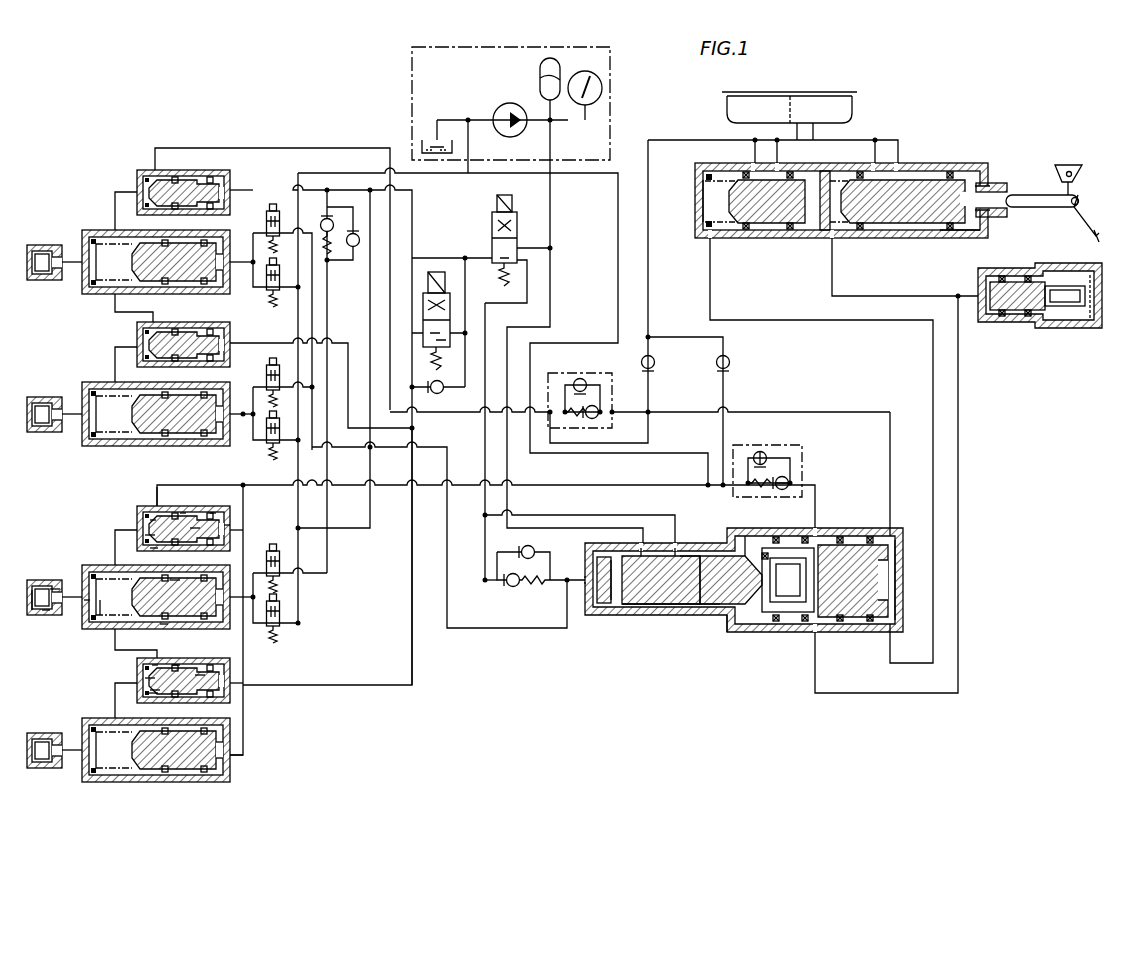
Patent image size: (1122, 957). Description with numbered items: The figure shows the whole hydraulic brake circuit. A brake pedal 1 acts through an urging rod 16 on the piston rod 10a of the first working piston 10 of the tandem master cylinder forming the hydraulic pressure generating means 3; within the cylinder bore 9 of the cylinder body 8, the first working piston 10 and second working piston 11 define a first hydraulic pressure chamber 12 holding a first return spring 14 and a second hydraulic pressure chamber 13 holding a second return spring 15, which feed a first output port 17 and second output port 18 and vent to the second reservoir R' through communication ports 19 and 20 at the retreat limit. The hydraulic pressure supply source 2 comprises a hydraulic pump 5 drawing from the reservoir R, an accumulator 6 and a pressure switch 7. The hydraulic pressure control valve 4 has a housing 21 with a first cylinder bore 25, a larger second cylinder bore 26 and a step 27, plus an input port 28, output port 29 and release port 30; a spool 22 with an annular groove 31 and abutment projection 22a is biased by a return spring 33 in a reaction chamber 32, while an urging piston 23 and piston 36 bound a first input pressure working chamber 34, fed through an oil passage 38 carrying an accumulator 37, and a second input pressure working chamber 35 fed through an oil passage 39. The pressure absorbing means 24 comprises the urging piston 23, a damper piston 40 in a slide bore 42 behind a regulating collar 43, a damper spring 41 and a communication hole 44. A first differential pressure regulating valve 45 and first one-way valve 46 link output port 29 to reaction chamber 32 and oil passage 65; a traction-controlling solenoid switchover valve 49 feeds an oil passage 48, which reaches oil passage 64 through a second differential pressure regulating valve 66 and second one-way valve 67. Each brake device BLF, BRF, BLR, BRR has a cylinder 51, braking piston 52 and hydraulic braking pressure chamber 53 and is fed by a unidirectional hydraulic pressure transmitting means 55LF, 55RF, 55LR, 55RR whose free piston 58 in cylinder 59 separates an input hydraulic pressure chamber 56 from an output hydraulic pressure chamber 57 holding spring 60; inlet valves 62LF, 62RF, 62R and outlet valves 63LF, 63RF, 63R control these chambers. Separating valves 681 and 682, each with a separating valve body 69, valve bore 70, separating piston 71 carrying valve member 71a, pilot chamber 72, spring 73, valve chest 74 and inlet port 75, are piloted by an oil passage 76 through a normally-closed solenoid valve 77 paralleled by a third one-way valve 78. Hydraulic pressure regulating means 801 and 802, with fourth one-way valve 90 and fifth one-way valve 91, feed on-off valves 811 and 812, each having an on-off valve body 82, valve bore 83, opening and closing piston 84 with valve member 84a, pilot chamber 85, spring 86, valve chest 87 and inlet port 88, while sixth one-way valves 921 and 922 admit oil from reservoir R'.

The brake pedal 1 is at (1098, 232).
The hydraulic pressure supply source 2 is at (608, 102).
The hydraulic pressure generating means 3 is at (829, 189).
The hydraulic pressure control valve 4 is at (746, 583).
The hydraulic pump 5 is at (500, 110).
The accumulator 6 is at (538, 76).
The pressure switch 7 is at (586, 98).
The cylinder body 8 is at (950, 240).
The cylinder bore 9 is at (738, 236).
The first working piston 10 is at (948, 170).
The piston rod 10a is at (998, 182).
The second working piston 11 is at (784, 236).
The first hydraulic pressure chamber 12 is at (842, 236).
The second hydraulic pressure chamber 13 is at (724, 168).
The first return spring 14 is at (872, 236).
The second return spring 15 is at (706, 178).
The urging rod 16 is at (1025, 200).
The first output port 17 is at (825, 236).
The second output port 18 is at (704, 235).
The communication port 19 is at (862, 170).
The communication port 20 is at (744, 170).
The housing 21 is at (780, 536).
The spool 22 is at (668, 608).
The abutment projection 22a is at (712, 612).
The urging piston 23 is at (764, 552).
The pressure absorbing means 24 is at (775, 612).
The first cylinder bore 25 is at (635, 604).
The second cylinder bore 26 is at (740, 548).
The step 27 is at (725, 632).
The input port 28 is at (661, 580).
The output port 29 is at (645, 546).
The release port 30 is at (678, 540).
The annular groove 31 is at (688, 612).
The reaction chamber 32 is at (604, 604).
The return spring 33 is at (582, 572).
The first input pressure working chamber 34 is at (840, 536).
The second input pressure working chamber 35 is at (900, 540).
The piston 36 is at (870, 536).
The accumulator 37 is at (1040, 330).
The oil passage 38 is at (963, 392).
The oil passage 39 is at (710, 278).
The damper piston 40 is at (807, 536).
The damper spring 41 is at (835, 632).
The slide bore 42 is at (800, 626).
The regulating collar 43 is at (731, 580).
The communication hole 44 is at (765, 624).
The first differential pressure regulating valve 45 is at (510, 588).
The first one-way valve 46 is at (520, 552).
The oil passage 48 is at (418, 240).
The traction-controlling solenoid switchover valve 49 is at (517, 230).
The cylinder 51 is at (44, 616).
The braking piston 52 is at (30, 594).
The hydraulic braking pressure chamber 53 is at (54, 588).
The unidirectional hydraulic pressure transmitting means 55RF is at (94, 232).
The unidirectional hydraulic pressure transmitting means 55LR is at (140, 446).
The unidirectional hydraulic pressure transmitting means 55LF is at (86, 574).
The unidirectional hydraulic pressure transmitting means 55RR is at (160, 784).
The input hydraulic pressure chamber 56 is at (240, 592).
The output hydraulic pressure chamber 57 is at (102, 618).
The free piston 58 is at (186, 592).
The cylinder 59 is at (166, 630).
The spring 60 is at (86, 606).
The inlet valve 62RF is at (266, 222).
The inlet valve 62R is at (266, 378).
The inlet valve 62LF is at (273, 548).
The outlet valve 63RF is at (272, 306).
The outlet valve 63R is at (272, 452).
The outlet valve 63LF is at (282, 632).
The oil passage 64 is at (327, 314).
The oil passage 65 is at (445, 548).
The second differential pressure regulating valve 66 is at (322, 222).
The second one-way valve 67 is at (354, 250).
The first separating valve 681 is at (190, 658).
The second separating valve 682 is at (188, 322).
The separating valve body 69 is at (243, 704).
The valve bore 70 is at (150, 692).
The separating piston 71 is at (202, 683).
The valve member 71a is at (144, 678).
The pilot chamber 72 is at (243, 682).
The spring 73 is at (174, 664).
The valve chest 74 is at (148, 695).
The inlet port 75 is at (150, 664).
The oil passage 76 is at (430, 610).
The normally-closed type solenoid valve 77 is at (422, 306).
The third one-way valve 78 is at (440, 394).
The hydraulic pressure regulating means 801 is at (755, 446).
The hydraulic pressure regulating means 802 is at (608, 372).
The on-off valve 811 is at (137, 522).
The on-off valve 812 is at (232, 172).
The on-off valve body 82 is at (210, 510).
The valve bore 83 is at (142, 536).
The opening and closing piston 84 is at (202, 531).
The valve member 84a is at (150, 518).
The pilot chamber 85 is at (232, 524).
The spring 86 is at (148, 548).
The valve chest 87 is at (180, 510).
The inlet port 88 is at (157, 487).
The fourth one-way valve 90 is at (783, 476).
The fifth one-way valve 91 is at (762, 454).
The sixth one-way valve 921 is at (730, 364).
The sixth one-way valve 922 is at (655, 364).
The reservoir R is at (434, 123).
The second reservoir R' is at (777, 114).
The right front wheel brake device BRF is at (44, 246).
The left rear wheel brake device BLR is at (44, 398).
The left front wheel brake device BLF is at (44, 640).
The right rear wheel brake device BRR is at (44, 734).